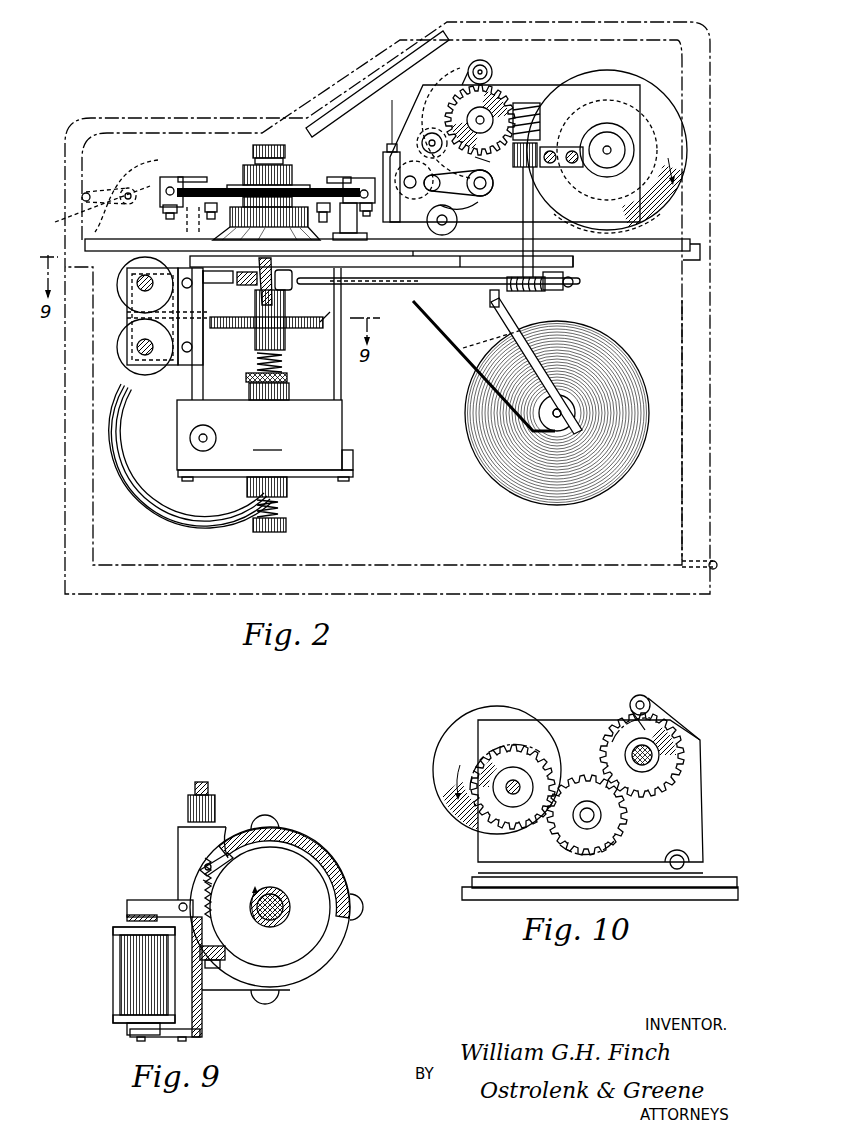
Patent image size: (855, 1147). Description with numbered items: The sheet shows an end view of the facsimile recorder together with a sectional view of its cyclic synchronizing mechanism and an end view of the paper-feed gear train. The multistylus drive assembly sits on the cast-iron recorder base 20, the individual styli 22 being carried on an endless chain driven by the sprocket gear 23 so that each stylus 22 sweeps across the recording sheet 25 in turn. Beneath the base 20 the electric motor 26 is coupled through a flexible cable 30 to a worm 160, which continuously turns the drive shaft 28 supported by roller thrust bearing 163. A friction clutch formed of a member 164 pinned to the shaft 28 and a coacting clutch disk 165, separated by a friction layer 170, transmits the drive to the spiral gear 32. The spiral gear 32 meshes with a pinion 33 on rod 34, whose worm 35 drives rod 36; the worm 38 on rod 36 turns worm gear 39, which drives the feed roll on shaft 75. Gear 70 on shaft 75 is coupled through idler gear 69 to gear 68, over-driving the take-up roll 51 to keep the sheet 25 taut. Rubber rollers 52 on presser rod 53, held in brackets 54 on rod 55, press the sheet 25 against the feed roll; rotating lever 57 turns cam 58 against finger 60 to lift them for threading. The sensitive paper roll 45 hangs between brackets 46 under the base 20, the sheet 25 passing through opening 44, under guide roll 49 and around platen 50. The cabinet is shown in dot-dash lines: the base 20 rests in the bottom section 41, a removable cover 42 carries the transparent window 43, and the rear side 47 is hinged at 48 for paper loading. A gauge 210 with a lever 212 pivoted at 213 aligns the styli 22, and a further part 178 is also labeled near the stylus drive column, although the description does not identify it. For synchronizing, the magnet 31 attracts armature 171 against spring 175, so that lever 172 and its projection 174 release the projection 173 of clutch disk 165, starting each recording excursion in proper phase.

In FIG. 2, the recorder base 20 is at (657, 248).
In FIG. 2, the stylus 22 is at (200, 182).
In FIG. 2, the sprocket gear 23 is at (313, 187).
In FIG. 2, the recording sheet 25 is at (526, 105).
In FIG. 2, the electric motor 26 is at (160, 505).
In FIG. 2, the drive shaft 28 is at (265, 533).
In FIG. 9, the drive shaft 28 is at (290, 907).
In FIG. 9, the flexible cable 30 is at (208, 786).
In FIG. 2, the synchronizing magnet 31 is at (125, 305).
In FIG. 9, the synchronizing magnet 31 is at (113, 965).
In FIG. 2, the spiral gear 32 is at (240, 285).
In FIG. 2, the pinion 33 is at (275, 300).
In FIG. 2, the rod 34 is at (405, 290).
In FIG. 2, the worm 35 is at (523, 291).
In FIG. 2, the rod 36 is at (527, 203).
In FIG. 2, the worm 38 is at (540, 108).
In FIG. 2, the worm gear 39 is at (497, 98).
In FIG. 2, the bottom section of cabinet 41 is at (613, 597).
In FIG. 2, the removable cover 42 is at (606, 27).
In FIG. 2, the transparent window 43 is at (388, 66).
In FIG. 2, the opening 44 is at (466, 245).
In FIG. 2, the roll of sensitive paper 45 is at (507, 478).
In FIG. 2, the brackets 46 is at (490, 377).
In FIG. 2, the rear side of cabinet 47 is at (702, 405).
In FIG. 2, the hinge 48 is at (717, 568).
In FIG. 2, the guide roll 49 is at (428, 226).
In FIG. 2, the platen 50 is at (408, 161).
In FIG. 2, the take-up roll 51 is at (653, 88).
In FIG. 10, the take-up roll 51 is at (452, 750).
In FIG. 2, the rubber rollers 52 is at (490, 55).
In FIG. 10, the rubber rollers 52 is at (648, 698).
In FIG. 2, the presser rod 53 is at (491, 82).
In FIG. 2, the brackets 54 is at (447, 80).
In FIG. 2, the rod 55 is at (423, 137).
In FIG. 2, the lever 57 is at (458, 183).
In FIG. 2, the cam 58 is at (478, 202).
In FIG. 2, the finger 60 is at (491, 165).
In FIG. 10, the gear 68 is at (523, 760).
In FIG. 10, the intermediate idler gear 69 is at (590, 778).
In FIG. 10, the gear 70 is at (672, 762).
In FIG. 10, the shaft 75 is at (648, 754).
In FIG. 9, the worm 160 is at (258, 925).
In FIG. 2, the roller thrust bearing 163 is at (253, 160).
In FIG. 2, the clutch member 164 is at (302, 328).
In FIG. 2, the clutch disk 165 is at (320, 322).
In FIG. 9, the clutch disk 165 is at (283, 865).
In FIG. 2, the friction layer 170 is at (252, 322).
In FIG. 9, the armature 171 is at (142, 903).
In FIG. 2, the lever 172 is at (208, 330).
In FIG. 9, the lever 172 is at (200, 873).
In FIG. 9, the projection of clutch disk 173 is at (223, 867).
In FIG. 9, the projection of lever 174 is at (227, 860).
In FIG. 9, the spring 175 is at (207, 887).
In FIG. 2, the drum base 178 is at (230, 180).
In FIG. 2, the gauge 210 is at (75, 210).
In FIG. 2, the lever 212 is at (175, 178).
In FIG. 2, the pivot 213 is at (125, 190).